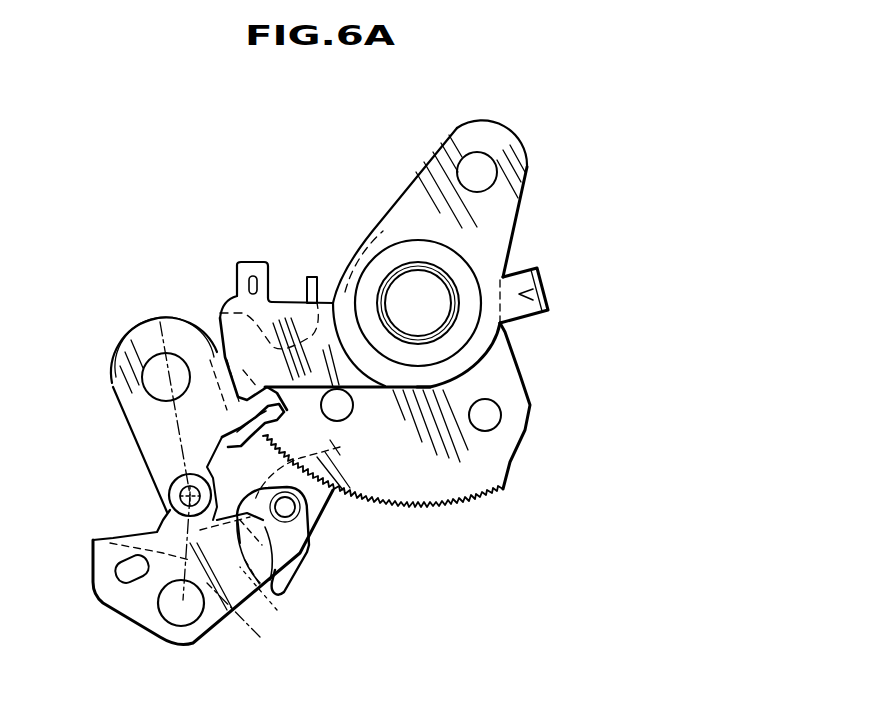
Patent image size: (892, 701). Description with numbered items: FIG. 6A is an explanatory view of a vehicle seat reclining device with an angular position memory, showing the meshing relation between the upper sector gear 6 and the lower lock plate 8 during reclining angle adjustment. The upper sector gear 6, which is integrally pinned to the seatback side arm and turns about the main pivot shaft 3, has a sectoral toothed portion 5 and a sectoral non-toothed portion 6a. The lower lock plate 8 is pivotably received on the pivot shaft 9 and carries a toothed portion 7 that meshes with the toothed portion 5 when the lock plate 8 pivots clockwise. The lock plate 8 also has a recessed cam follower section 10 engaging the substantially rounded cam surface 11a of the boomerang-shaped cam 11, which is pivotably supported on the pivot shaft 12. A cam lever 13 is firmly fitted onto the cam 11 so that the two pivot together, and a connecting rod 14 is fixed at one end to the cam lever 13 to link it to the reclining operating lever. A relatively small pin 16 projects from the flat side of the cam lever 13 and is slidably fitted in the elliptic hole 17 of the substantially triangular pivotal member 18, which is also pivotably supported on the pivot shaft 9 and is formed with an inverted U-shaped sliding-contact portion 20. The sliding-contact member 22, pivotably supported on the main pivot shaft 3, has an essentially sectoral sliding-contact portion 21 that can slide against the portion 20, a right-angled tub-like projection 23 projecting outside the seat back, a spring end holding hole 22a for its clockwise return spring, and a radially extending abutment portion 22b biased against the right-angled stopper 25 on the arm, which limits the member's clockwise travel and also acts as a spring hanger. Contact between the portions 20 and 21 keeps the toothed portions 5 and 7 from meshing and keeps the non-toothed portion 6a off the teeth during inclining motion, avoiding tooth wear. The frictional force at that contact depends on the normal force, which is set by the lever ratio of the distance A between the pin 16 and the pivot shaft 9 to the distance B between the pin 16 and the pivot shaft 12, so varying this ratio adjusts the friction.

The main pivot shaft 3 is at (438, 298).
The sectoral toothed portion 5 is at (483, 497).
The upper sector gear 6 is at (505, 445).
The sectoral non-toothed portion 6a is at (216, 316).
The toothed portion 7 is at (300, 478).
The lower lock plate 8 is at (112, 370).
The pivot shaft 9 is at (163, 357).
The recessed cam follower section 10 is at (245, 574).
The boomerang-shaped cam 11 is at (240, 627).
The rounded cam surface 11a is at (323, 465).
The pivot shaft 12 is at (167, 607).
The cam lever 13 is at (208, 630).
The connecting rod 14 is at (298, 513).
The pin 16 is at (183, 499).
The elliptic hole 17 is at (170, 497).
The pivotal member 18 is at (140, 345).
The inverted U-shaped sliding-contact portion 20 is at (225, 428).
The sectoral sliding-contact portion 21 is at (227, 340).
The sliding-contact member 22 is at (357, 252).
The spring end holding hole 22a is at (238, 290).
The abutment portion 22b is at (287, 300).
The right-angled tub-like projection 23 is at (540, 297).
The right-angled stopper 25 is at (312, 275).
The distance A is at (170, 421).
The distance B is at (170, 565).